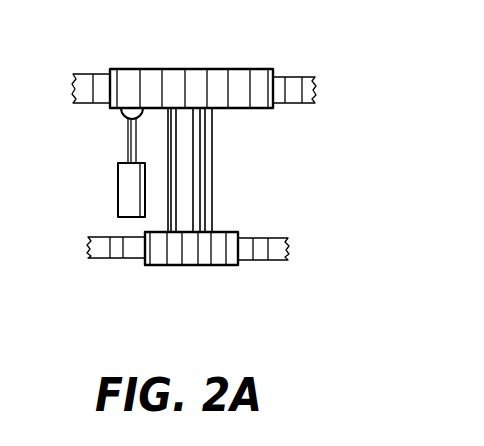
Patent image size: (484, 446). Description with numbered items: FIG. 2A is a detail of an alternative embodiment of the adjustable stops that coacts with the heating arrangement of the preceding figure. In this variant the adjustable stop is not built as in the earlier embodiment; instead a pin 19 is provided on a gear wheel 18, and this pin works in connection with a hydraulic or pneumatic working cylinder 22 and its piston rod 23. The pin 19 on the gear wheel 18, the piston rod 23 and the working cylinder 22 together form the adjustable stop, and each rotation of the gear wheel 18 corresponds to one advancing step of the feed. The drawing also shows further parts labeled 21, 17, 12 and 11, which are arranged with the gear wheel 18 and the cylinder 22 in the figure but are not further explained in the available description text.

The gear wheel 18 is at (197, 72).
The upper bar extension 21 is at (297, 77).
The pin 19 is at (118, 112).
The piston rod 23 is at (127, 142).
The hydraulic or pneumatic working cylinder 22 is at (118, 187).
The vertical posts 17 is at (205, 186).
The lower support bar 12 is at (188, 266).
The lower bar extension 11 is at (283, 261).